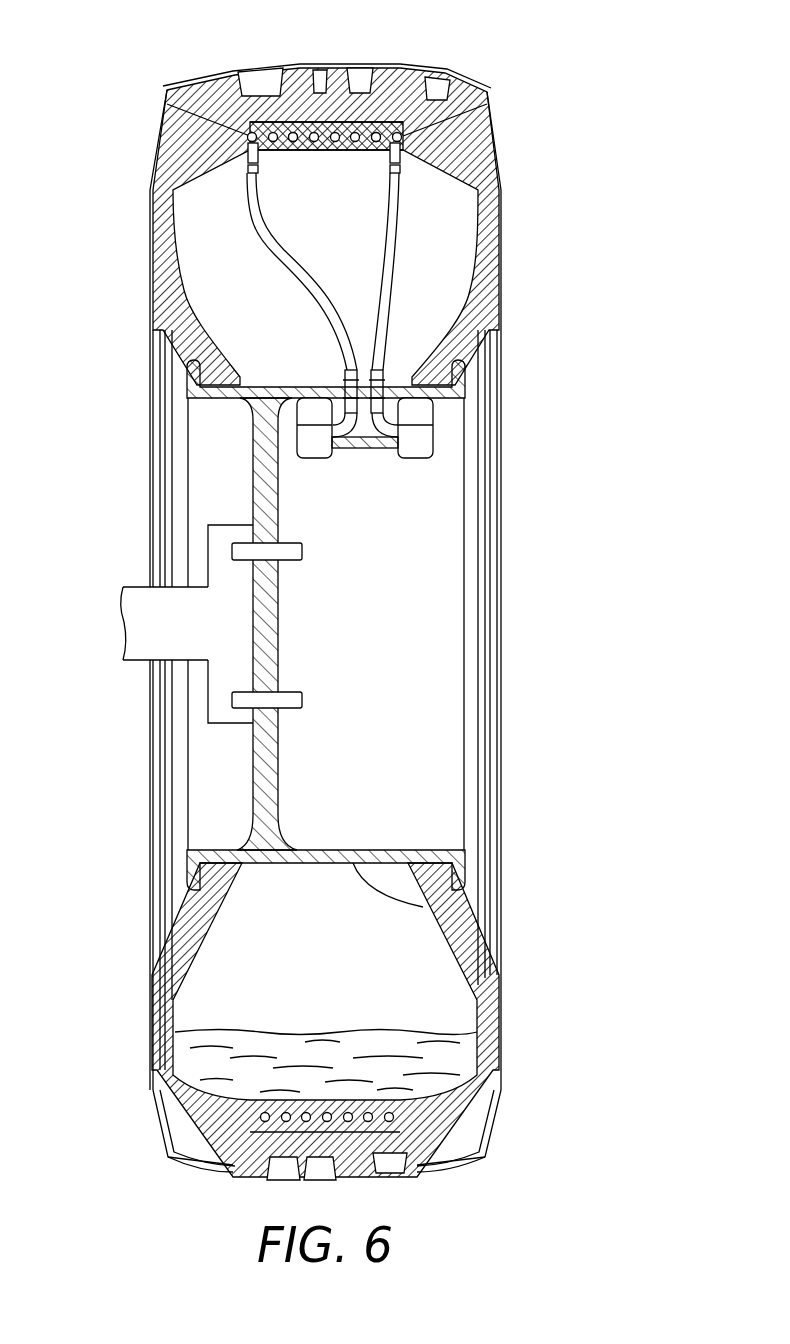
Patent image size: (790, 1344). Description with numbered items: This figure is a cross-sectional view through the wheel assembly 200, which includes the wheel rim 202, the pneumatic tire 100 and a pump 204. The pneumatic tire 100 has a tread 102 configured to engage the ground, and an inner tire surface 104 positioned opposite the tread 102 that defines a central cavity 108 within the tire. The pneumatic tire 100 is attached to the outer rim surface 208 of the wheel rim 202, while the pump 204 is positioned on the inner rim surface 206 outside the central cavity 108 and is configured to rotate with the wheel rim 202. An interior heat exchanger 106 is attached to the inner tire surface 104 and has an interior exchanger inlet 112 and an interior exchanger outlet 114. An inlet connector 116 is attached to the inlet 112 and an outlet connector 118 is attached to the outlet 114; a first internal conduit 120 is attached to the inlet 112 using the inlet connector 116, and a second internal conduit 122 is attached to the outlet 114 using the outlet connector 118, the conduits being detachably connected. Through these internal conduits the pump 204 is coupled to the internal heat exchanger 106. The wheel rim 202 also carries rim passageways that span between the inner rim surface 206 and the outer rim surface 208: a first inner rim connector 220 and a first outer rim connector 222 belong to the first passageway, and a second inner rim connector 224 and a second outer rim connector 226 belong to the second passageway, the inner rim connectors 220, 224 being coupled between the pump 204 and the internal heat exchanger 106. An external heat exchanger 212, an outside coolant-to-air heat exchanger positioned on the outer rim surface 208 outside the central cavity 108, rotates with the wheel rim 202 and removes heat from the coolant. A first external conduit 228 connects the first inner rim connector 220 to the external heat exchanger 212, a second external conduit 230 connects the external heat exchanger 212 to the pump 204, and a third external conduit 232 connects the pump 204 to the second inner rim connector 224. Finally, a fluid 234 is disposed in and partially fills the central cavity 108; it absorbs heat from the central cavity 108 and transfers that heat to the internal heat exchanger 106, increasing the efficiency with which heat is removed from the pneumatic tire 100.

The pneumatic tire 100 is at (207, 80).
The tread 102 is at (325, 140).
The inner tire surface 104 is at (300, 122).
The interior heat exchanger 106 is at (383, 122).
The central cavity 108 is at (340, 977).
The interior exchanger inlet 112 is at (410, 126).
The interior exchanger outlet 114 is at (167, 104).
The inlet connector 116 is at (400, 157).
The outlet connector 118 is at (250, 157).
The first internal conduit 120 is at (393, 232).
The second internal conduit 122 is at (247, 207).
The wheel assembly 200 is at (628, 86).
The wheel rim 202 is at (267, 837).
The pump 204 is at (420, 420).
The inner rim surface 206 is at (403, 850).
The outer rim surface 208 is at (423, 907).
The external heat exchanger 212 is at (308, 433).
The first inner rim connector 220 is at (285, 407).
The first outer rim connector 222 is at (347, 373).
The second inner rim connector 224 is at (385, 410).
The second outer rim connector 226 is at (383, 373).
The first external conduit 228 is at (341, 427).
The second external conduit 230 is at (362, 444).
The third external conduit 232 is at (387, 427).
The fluid 234 is at (417, 1040).